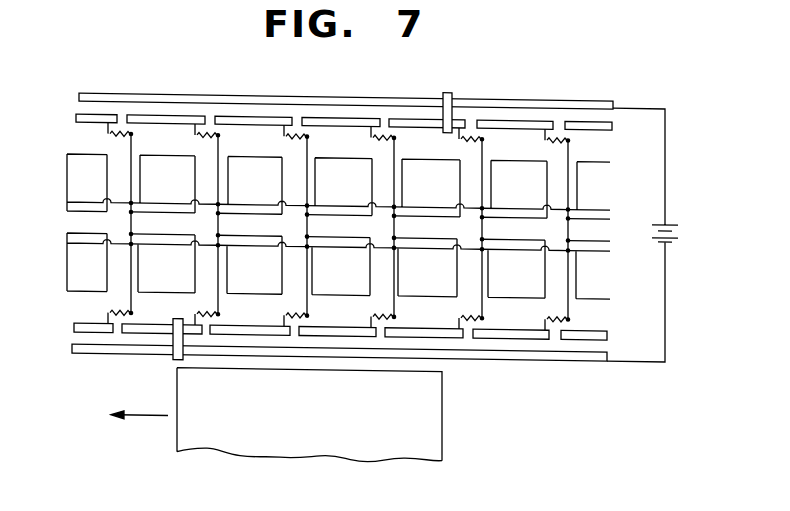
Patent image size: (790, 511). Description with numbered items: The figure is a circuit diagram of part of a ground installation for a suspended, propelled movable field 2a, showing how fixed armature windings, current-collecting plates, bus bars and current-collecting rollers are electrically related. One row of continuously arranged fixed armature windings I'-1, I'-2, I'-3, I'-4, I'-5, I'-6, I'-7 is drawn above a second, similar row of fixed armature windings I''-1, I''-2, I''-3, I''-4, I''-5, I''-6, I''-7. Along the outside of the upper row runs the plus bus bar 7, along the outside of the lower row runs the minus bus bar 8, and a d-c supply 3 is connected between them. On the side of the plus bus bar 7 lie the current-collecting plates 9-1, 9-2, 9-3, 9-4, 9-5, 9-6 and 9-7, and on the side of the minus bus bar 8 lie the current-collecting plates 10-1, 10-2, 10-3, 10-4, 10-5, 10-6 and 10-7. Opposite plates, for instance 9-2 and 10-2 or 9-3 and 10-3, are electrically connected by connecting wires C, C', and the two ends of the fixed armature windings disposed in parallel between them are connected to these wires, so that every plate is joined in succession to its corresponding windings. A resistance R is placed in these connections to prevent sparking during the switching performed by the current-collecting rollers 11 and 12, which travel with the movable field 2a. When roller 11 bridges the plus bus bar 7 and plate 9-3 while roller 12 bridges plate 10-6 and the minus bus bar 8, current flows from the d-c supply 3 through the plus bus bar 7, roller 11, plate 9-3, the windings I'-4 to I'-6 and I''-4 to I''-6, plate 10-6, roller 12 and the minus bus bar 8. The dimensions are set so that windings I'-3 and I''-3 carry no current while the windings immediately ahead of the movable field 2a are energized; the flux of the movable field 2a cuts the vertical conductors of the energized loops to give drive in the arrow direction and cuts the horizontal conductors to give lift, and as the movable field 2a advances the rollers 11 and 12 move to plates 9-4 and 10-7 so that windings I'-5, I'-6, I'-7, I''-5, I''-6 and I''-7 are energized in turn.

The plus bus bar 7 is at (592, 89).
The minus bus bar 8 is at (560, 354).
The d-c supply 3 is at (673, 229).
The current-collecting roller 11 is at (448, 89).
The current-collecting roller 12 is at (181, 317).
The current-collecting plate 9-1 is at (613, 120).
The current-collecting plate 9-2 is at (538, 122).
The current-collecting plate 9-3 is at (414, 111).
The current-collecting plate 9-4 is at (337, 111).
The current-collecting plate 9-5 is at (251, 111).
The current-collecting plate 9-6 is at (158, 111).
The current-collecting plate 9-7 is at (83, 112).
The current-collecting plate 10-1 is at (593, 333).
The current-collecting plate 10-2 is at (512, 332).
The current-collecting plate 10-3 is at (424, 318).
The current-collecting plate 10-4 is at (337, 316).
The current-collecting plate 10-5 is at (250, 316).
The current-collecting plate 10-6 is at (150, 334).
The current-collecting plate 10-7 is at (73, 332).
The resistance R is at (112, 133).
The connecting wire C is at (458, 224).
The connecting wire C' is at (369, 223).
The movable field 2a is at (443, 428).
The fixed armature winding I'-1 is at (595, 191).
The fixed armature winding I'-2 is at (525, 189).
The fixed armature winding I'-3 is at (438, 188).
The fixed armature winding I'-4 is at (350, 187).
The fixed armature winding I'-5 is at (262, 185).
The fixed armature winding I'-6 is at (174, 184).
The fixed armature winding I'-7 is at (96, 183).
The fixed armature winding I''-1 is at (598, 270).
The fixed armature winding I''-2 is at (525, 268).
The fixed armature winding I''-3 is at (438, 267).
The fixed armature winding I''-4 is at (350, 266).
The fixed armature winding I''-5 is at (262, 264).
The fixed armature winding I''-6 is at (174, 263).
The fixed armature winding I''-7 is at (95, 262).